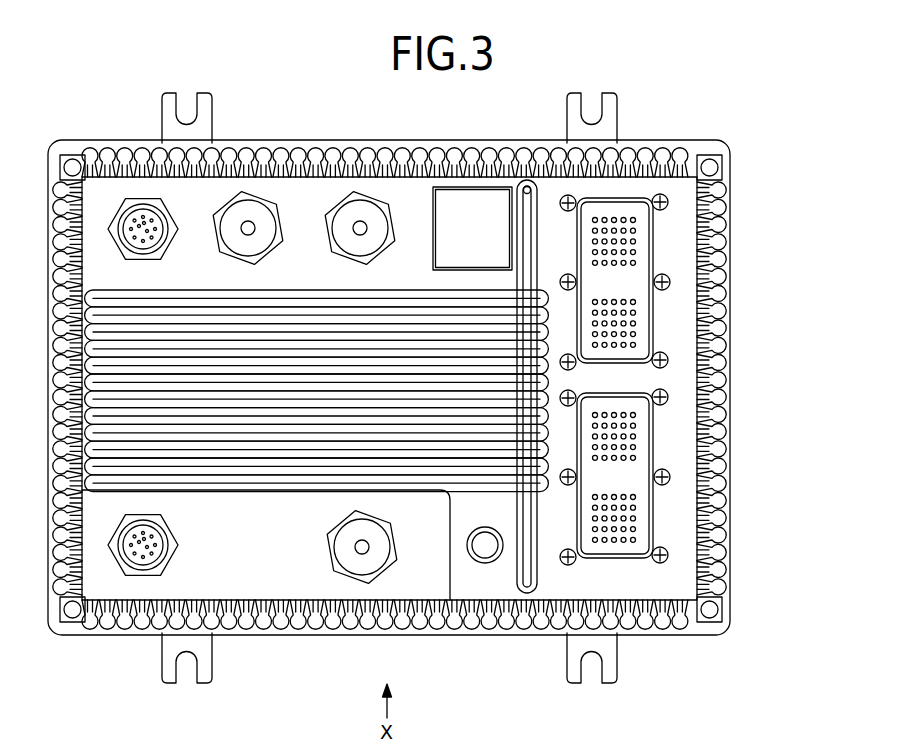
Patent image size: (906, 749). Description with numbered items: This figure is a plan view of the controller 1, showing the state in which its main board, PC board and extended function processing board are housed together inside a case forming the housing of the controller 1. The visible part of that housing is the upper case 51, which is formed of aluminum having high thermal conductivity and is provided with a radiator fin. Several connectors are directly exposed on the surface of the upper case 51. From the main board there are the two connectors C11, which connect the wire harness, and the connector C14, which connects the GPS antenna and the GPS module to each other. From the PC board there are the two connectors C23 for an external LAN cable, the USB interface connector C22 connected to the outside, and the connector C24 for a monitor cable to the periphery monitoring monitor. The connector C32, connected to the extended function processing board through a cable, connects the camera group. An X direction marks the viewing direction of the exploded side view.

The controller 1 is at (757, 158).
The upper case 51 is at (730, 193).
The connectors C11 is at (622, 283).
The connector C32 is at (143, 232).
The connectors C23 is at (358, 218).
The USB interface connector C22 is at (361, 550).
The connector C24 is at (143, 548).
The connector C14 is at (485, 548).